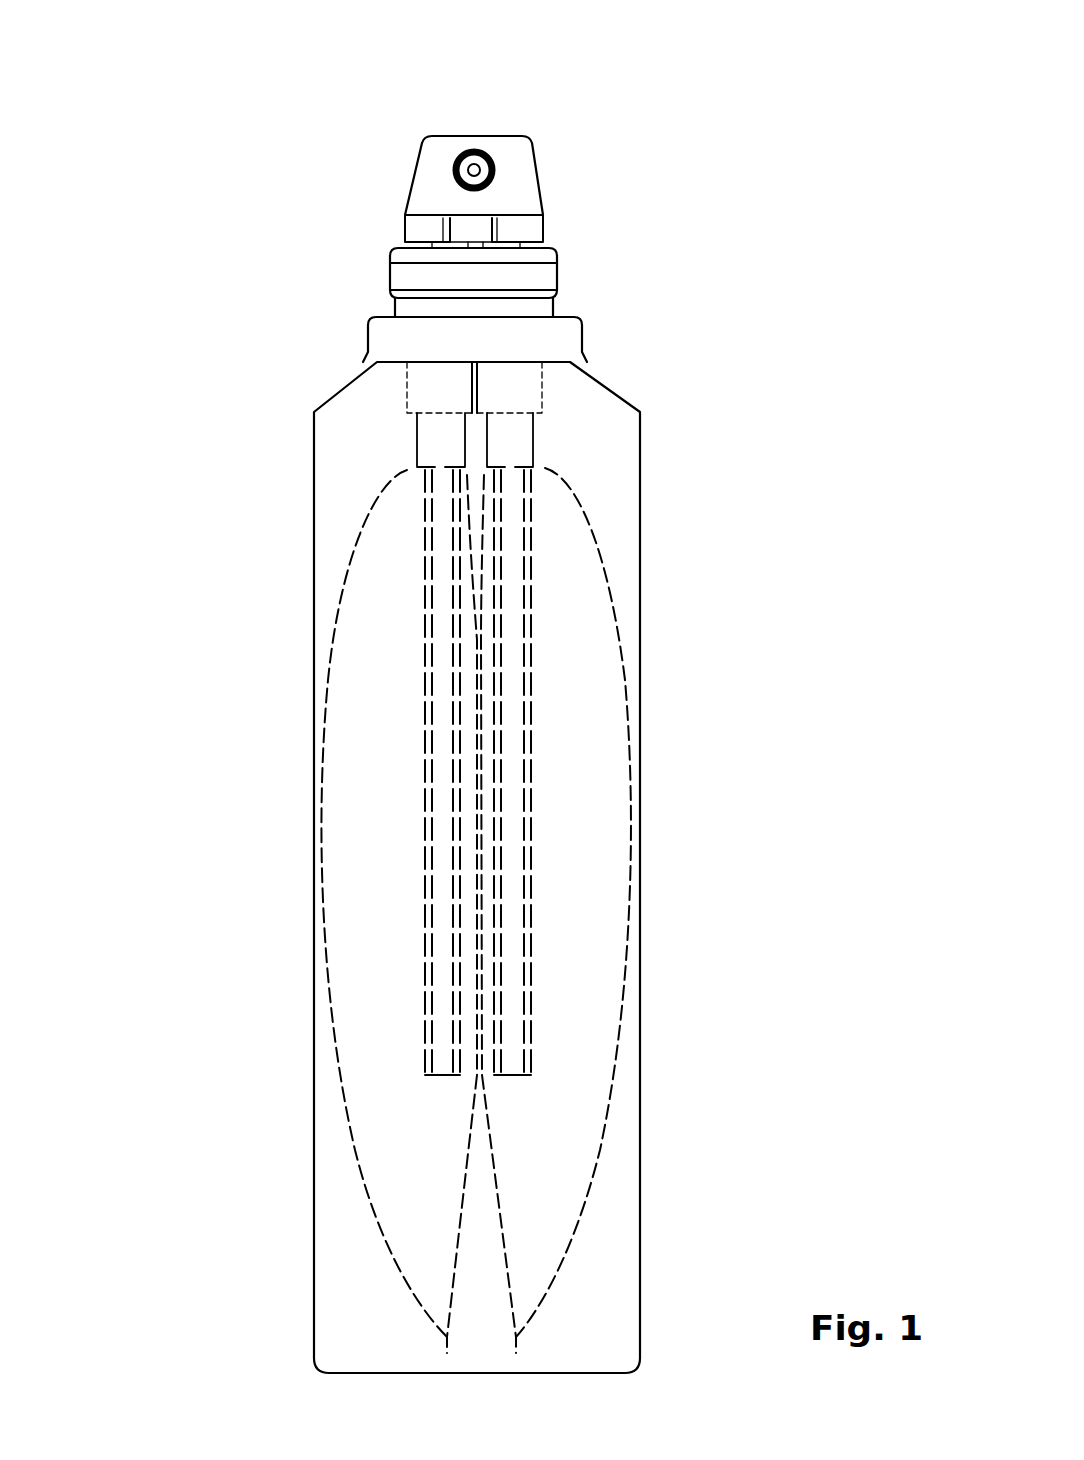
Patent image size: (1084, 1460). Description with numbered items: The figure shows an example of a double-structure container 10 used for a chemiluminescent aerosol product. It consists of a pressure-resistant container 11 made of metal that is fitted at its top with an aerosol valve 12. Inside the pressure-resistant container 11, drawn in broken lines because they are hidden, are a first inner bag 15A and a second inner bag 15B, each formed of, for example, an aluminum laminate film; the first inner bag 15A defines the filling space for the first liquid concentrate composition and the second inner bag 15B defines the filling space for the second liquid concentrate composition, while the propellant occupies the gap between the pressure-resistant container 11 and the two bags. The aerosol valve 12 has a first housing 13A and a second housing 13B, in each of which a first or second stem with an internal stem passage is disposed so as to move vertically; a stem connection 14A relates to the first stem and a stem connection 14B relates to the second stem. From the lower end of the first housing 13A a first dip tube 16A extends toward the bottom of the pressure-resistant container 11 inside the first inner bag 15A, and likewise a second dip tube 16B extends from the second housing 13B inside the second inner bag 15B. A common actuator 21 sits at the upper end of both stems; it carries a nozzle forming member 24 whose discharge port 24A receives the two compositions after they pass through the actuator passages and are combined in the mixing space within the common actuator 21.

The double-structure container 10 is at (245, 100).
The pressure-resistant container 11 is at (640, 482).
The aerosol valve 12 is at (557, 288).
The first housing 13A is at (510, 380).
The second housing 13B is at (425, 382).
The stem connection 14A is at (543, 243).
The stem connection 14B is at (405, 245).
The first inner bag 15A is at (607, 568).
The second inner bag 15B is at (352, 550).
The first dip tube 16A is at (531, 778).
The second dip tube 16B is at (425, 748).
The common actuator 21 is at (483, 134).
The nozzle forming member 24 is at (455, 168).
The discharge port 24A is at (494, 166).